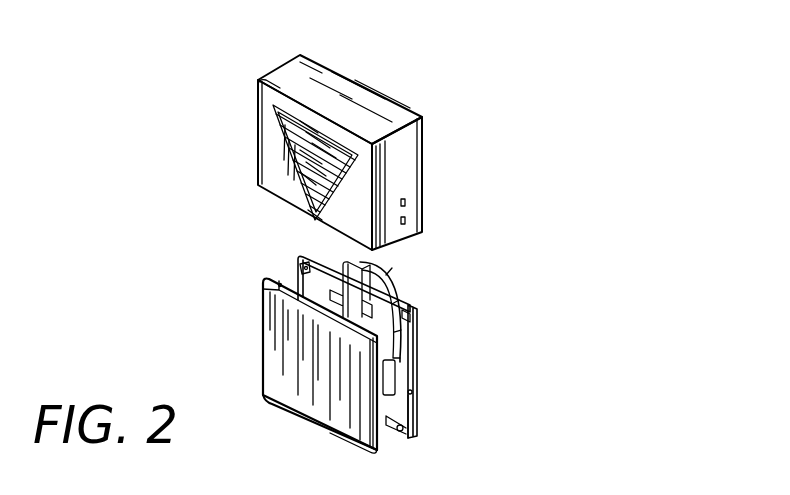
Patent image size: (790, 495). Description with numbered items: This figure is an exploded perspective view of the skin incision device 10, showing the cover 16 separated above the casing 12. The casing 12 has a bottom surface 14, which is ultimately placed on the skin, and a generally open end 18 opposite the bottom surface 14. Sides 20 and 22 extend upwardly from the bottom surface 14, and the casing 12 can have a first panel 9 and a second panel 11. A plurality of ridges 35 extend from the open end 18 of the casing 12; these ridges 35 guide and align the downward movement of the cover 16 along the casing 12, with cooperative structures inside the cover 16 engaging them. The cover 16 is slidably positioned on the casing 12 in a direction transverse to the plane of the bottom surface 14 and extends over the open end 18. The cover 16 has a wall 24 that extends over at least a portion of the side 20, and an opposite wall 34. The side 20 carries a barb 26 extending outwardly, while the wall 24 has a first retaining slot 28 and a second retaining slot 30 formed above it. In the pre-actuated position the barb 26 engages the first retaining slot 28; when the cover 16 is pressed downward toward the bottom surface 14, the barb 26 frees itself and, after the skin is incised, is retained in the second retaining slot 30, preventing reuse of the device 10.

The skin incision device 10 is at (403, 62).
The wall 24 is at (413, 148).
The opposite wall 34 is at (258, 110).
The cover 16 is at (266, 162).
The second retaining slot 30 is at (405, 200).
The first retaining slot 28 is at (405, 222).
The open end 18 is at (300, 257).
The side 22 is at (298, 266).
The casing 12 is at (262, 358).
The ridges 35 is at (268, 308).
The second panel 11 is at (297, 417).
The bottom surface 14 is at (345, 447).
The side 20 is at (415, 330).
The barb 26 is at (415, 387).
The first panel 9 is at (413, 400).